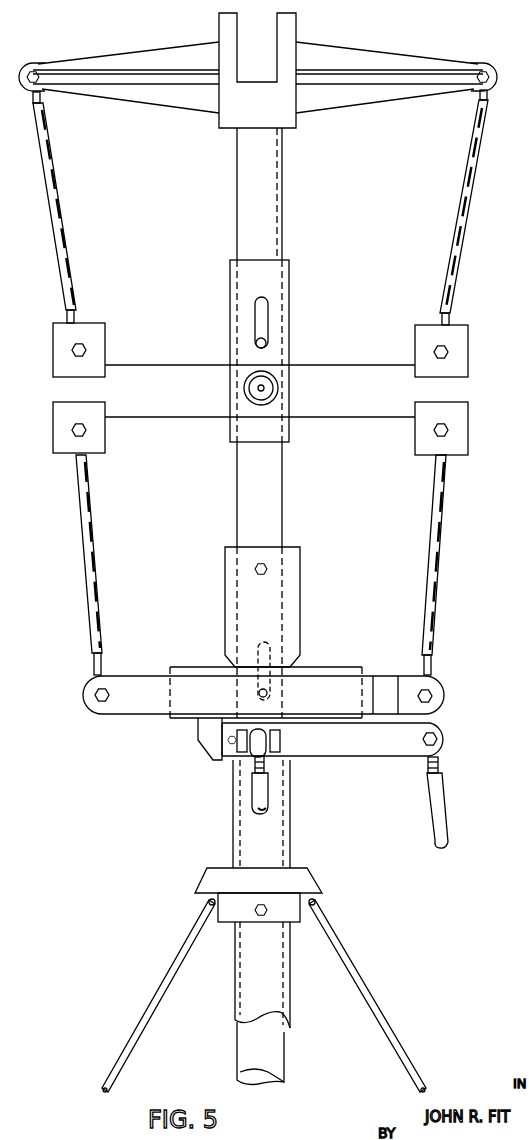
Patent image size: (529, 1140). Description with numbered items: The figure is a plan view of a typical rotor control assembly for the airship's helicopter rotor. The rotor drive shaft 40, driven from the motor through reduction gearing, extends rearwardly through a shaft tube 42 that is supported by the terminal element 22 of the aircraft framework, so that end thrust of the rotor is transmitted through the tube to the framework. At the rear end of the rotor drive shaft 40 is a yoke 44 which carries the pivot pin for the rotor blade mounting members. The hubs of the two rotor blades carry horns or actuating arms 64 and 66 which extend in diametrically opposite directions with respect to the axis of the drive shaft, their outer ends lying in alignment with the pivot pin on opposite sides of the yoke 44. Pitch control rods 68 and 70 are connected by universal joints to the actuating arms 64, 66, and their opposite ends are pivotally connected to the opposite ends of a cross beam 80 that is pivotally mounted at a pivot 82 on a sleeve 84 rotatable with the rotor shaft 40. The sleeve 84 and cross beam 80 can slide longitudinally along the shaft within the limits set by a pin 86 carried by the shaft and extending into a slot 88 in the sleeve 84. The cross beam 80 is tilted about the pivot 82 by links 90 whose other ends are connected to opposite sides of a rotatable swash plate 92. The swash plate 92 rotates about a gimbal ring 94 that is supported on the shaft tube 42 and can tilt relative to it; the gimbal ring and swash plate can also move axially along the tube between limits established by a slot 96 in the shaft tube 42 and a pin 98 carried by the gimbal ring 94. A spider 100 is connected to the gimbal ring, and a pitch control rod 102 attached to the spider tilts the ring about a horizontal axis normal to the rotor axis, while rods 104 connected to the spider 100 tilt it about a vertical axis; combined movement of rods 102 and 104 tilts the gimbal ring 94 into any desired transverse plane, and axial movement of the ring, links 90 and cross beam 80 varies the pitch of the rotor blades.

The terminal element 22 is at (226, 880).
The rotor drive shaft 40 is at (268, 192).
The shaft tube 42 is at (284, 778).
The yoke 44 is at (281, 114).
The actuating arm 64 is at (363, 93).
The actuating arm 66 is at (163, 96).
The pitch control rod 68 is at (473, 192).
The pitch control rod 70 is at (62, 238).
The cross beam 80 is at (346, 408).
The pivot 82 is at (254, 394).
The sleeve 84 is at (243, 313).
The pin 86 is at (266, 341).
The slot 88 is at (265, 305).
The links 90 is at (84, 510).
The swash plate 92 is at (143, 702).
The gimbal ring 94 is at (218, 672).
The slot 96 is at (263, 655).
The pin 98 is at (268, 694).
The spider 100 is at (344, 748).
The pitch control rod 102 is at (440, 795).
The rods 104 is at (258, 800).